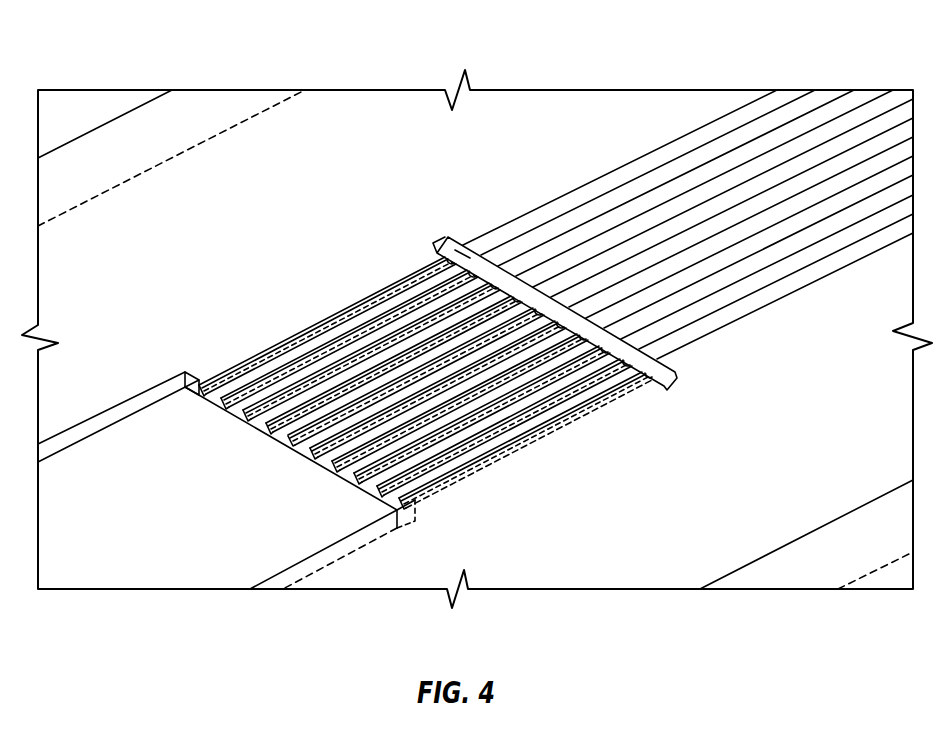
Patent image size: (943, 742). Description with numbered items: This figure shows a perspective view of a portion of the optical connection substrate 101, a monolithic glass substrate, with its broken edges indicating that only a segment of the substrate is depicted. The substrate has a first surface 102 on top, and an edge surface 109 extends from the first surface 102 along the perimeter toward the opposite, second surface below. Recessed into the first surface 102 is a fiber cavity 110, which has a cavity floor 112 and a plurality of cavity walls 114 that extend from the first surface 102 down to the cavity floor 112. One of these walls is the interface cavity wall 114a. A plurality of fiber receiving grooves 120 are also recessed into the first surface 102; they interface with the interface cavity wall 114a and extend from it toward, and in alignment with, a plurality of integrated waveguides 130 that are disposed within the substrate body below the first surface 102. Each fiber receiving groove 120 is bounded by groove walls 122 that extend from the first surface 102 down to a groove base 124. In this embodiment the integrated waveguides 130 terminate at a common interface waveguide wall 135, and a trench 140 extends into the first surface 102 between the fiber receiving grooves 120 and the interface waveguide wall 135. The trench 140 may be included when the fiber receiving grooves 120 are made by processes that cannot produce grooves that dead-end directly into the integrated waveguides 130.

The optical connection substrate 101 is at (386, 145).
The first surface 102 is at (258, 191).
The edge surface 109 is at (788, 566).
The fiber cavity 110 is at (120, 540).
The cavity floor 112 is at (198, 519).
The cavity walls 114 is at (90, 430).
The interface cavity wall 114a is at (217, 413).
The fiber receiving grooves 120 is at (318, 315).
The groove walls 122 is at (440, 478).
The groove base 124 is at (400, 530).
The integrated waveguides 130 is at (617, 168).
The interface waveguide wall 135 is at (462, 251).
The trench 140 is at (457, 247).